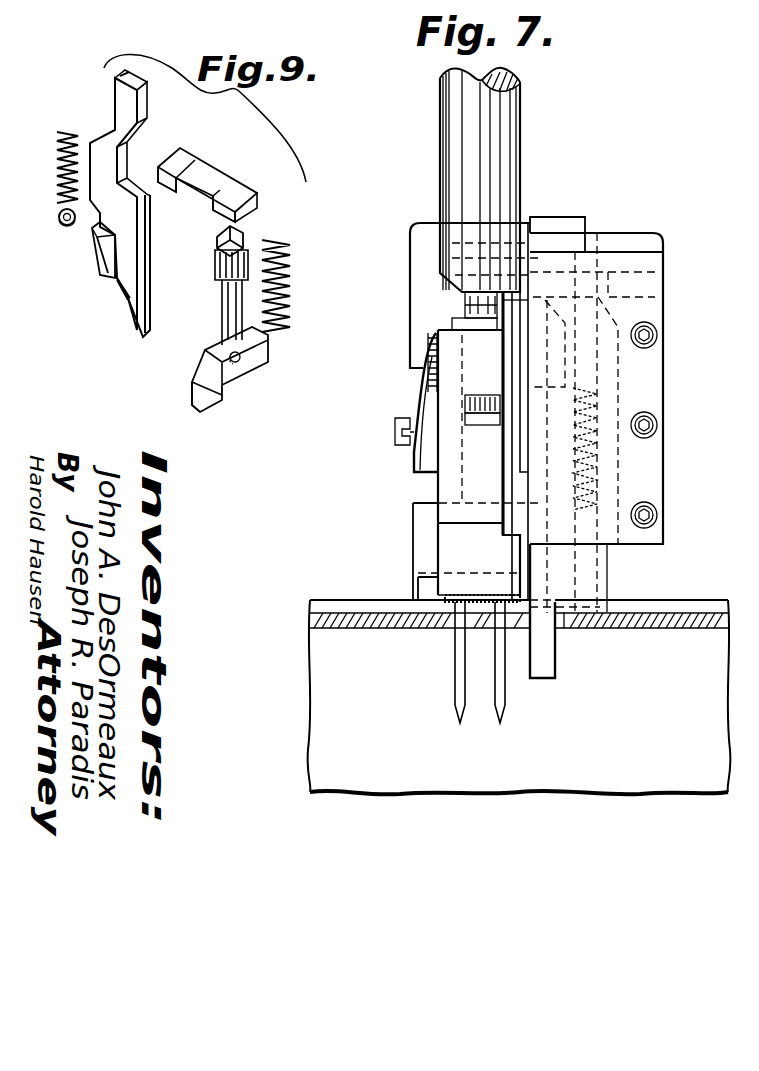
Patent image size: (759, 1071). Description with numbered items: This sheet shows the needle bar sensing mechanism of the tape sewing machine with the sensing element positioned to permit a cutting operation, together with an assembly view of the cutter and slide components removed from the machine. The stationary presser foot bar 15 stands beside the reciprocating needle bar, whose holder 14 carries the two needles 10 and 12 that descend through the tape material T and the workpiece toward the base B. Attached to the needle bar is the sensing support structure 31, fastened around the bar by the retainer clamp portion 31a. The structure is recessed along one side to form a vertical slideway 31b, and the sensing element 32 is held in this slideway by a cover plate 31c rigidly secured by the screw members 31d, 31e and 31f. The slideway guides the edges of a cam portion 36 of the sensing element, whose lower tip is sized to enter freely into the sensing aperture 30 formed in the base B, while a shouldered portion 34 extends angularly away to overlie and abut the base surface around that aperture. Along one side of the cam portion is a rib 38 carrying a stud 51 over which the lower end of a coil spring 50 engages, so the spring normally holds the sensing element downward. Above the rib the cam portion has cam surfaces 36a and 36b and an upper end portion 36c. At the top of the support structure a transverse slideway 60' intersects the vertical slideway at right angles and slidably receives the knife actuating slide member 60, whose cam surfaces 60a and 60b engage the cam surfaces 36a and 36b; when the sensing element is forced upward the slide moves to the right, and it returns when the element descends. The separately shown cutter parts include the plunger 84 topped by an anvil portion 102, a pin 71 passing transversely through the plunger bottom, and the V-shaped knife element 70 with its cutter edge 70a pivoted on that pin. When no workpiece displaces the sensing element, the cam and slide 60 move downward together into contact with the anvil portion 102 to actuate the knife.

In FIG. 7, the presser foot bar 15 is at (506, 130).
In FIG. 7, the retainer clamp portion 31a is at (422, 263).
In FIG. 7, the holder 14 is at (420, 460).
In FIG. 7, the vertical slideway 31b is at (604, 240).
In FIG. 7, the sensing support structure 31 is at (644, 244).
In FIG. 7, the transverse slideway 60' is at (624, 258).
In FIG. 7, the cover plate 31c is at (640, 310).
In FIG. 7, the knife actuating slide member 60 is at (532, 242).
In FIG. 9, the knife actuating slide member 60 is at (213, 183).
In FIG. 7, the screw member 31d is at (658, 336).
In FIG. 7, the screw member 31e is at (658, 425).
In FIG. 7, the screw member 31f is at (658, 516).
In FIG. 7, the cam portion 36 is at (597, 363).
In FIG. 9, the cam portion 36 is at (138, 249).
In FIG. 7, the coil spring 50 is at (597, 412).
In FIG. 9, the coil spring 50 is at (56, 164).
In FIG. 7, the tape material T is at (483, 595).
In FIG. 7, the base B is at (660, 628).
In FIG. 7, the needle 12 is at (455, 674).
In FIG. 7, the needle 10 is at (503, 690).
In FIG. 7, the sensing element 32 is at (548, 671).
In FIG. 9, the sensing element 32 is at (146, 321).
In FIG. 7, the sensing aperture 30 is at (562, 619).
In FIG. 9, the upper end portion 36c is at (104, 69).
In FIG. 9, the cam surface 36a is at (102, 126).
In FIG. 9, the cam surface 36b is at (133, 140).
In FIG. 9, the rib 38 is at (100, 250).
In FIG. 9, the shouldered portion 34 is at (116, 293).
In FIG. 9, the stud 51 is at (60, 228).
In FIG. 9, the cam surface 60a is at (194, 180).
In FIG. 9, the cam surface 60b is at (218, 212).
In FIG. 9, the anvil portion 102 is at (238, 229).
In FIG. 9, the plunger 84 is at (263, 242).
In FIG. 9, the knife element 70 is at (228, 386).
In FIG. 9, the cutter edge 70a is at (197, 408).
In FIG. 9, the pin 71 is at (237, 360).